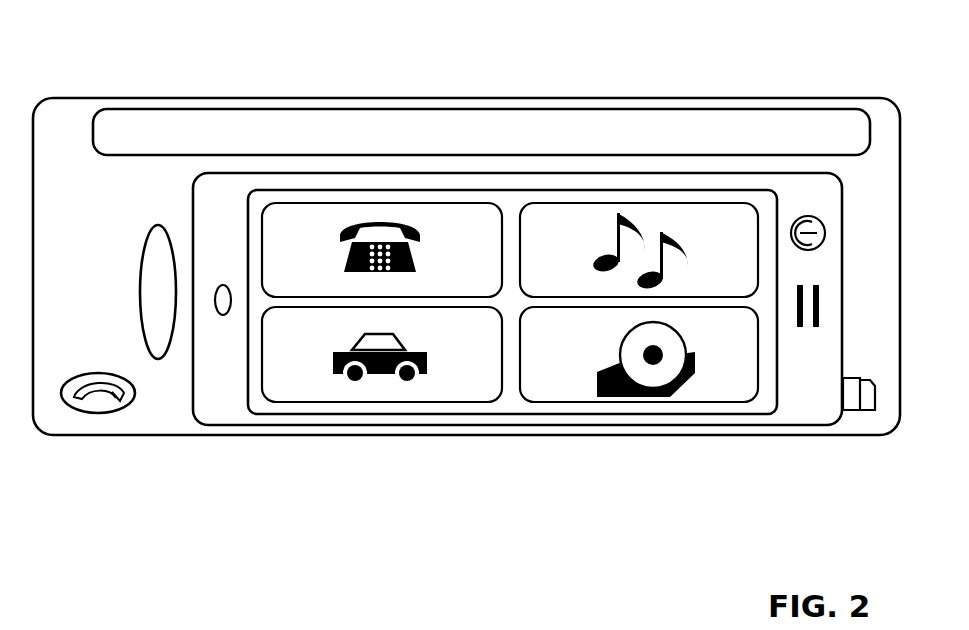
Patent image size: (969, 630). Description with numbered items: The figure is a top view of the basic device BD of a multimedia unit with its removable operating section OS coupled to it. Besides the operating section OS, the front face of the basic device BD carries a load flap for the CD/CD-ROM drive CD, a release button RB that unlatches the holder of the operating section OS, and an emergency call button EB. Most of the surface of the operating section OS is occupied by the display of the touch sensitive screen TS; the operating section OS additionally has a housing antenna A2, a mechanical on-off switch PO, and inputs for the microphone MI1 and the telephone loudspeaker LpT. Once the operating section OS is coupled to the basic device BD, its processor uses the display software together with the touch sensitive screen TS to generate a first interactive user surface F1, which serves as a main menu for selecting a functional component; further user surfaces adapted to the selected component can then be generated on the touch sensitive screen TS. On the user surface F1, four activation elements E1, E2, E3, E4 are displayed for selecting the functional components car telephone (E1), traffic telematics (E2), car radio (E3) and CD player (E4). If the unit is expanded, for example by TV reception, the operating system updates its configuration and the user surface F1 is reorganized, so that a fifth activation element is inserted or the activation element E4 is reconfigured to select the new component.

The basic device BD is at (63, 133).
The CD/CD-ROM drive CD is at (481, 132).
The operating section OS is at (230, 185).
The first interactive user surface F1 is at (513, 205).
The touch sensitive screen TS is at (513, 400).
The activation element for car telephone E1 is at (300, 272).
The activation element for traffic telematics E2 is at (440, 383).
The activation element for car radio E3 is at (557, 287).
The activation element for CD player E4 is at (700, 385).
The mechanical on-off switch PO is at (818, 217).
The telephone loudspeaker LpT is at (808, 330).
The housing antenna A2 is at (870, 412).
The emergency call button EB is at (157, 345).
The microphone MI1 is at (223, 315).
The release button RB is at (93, 410).